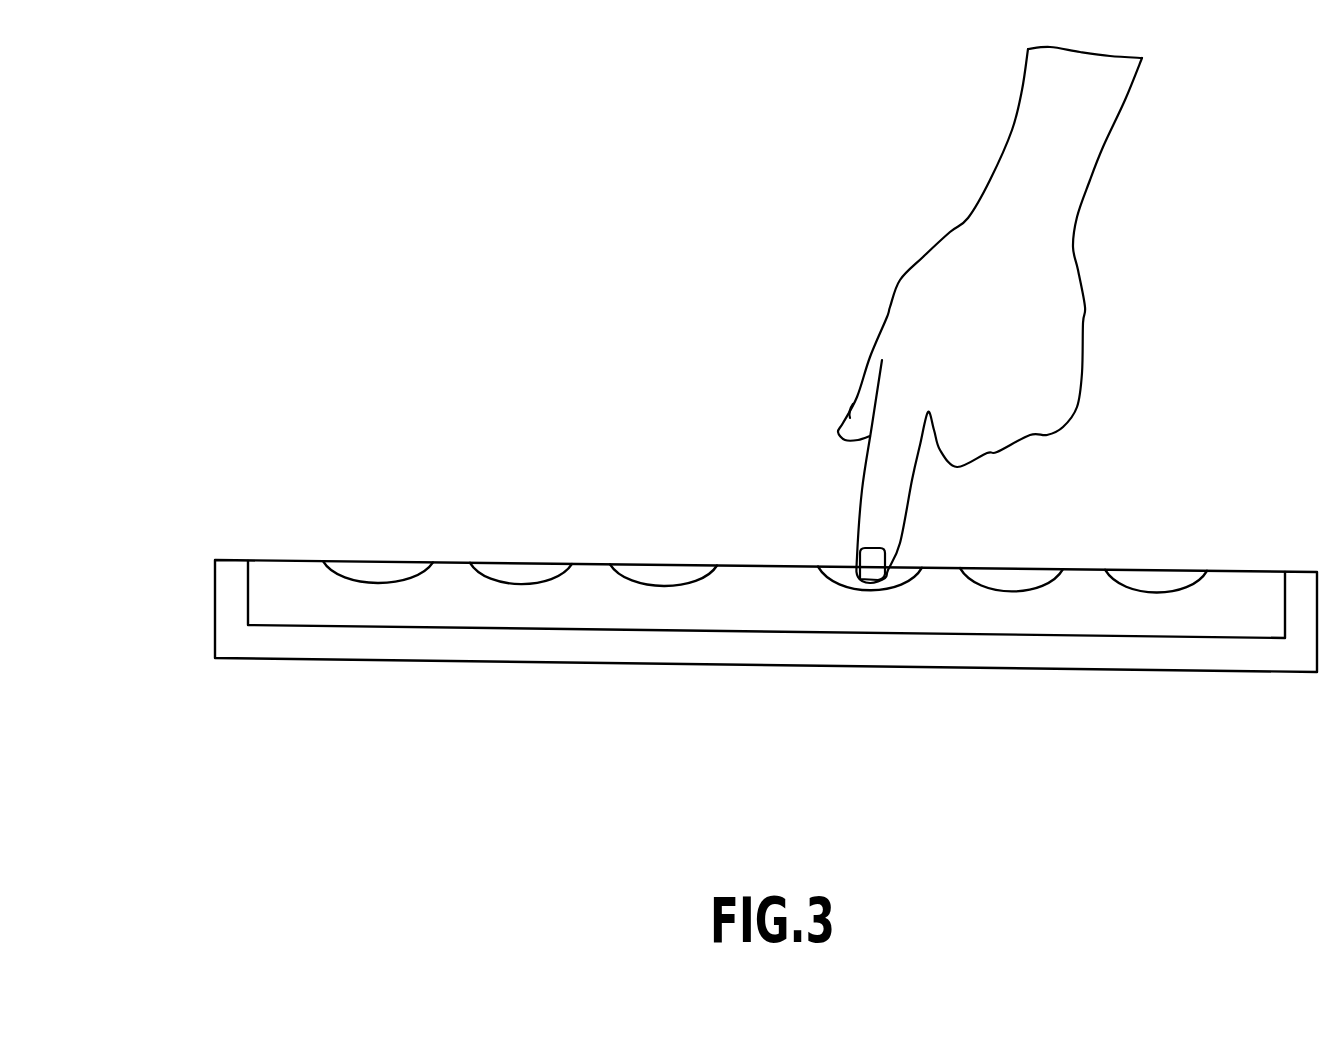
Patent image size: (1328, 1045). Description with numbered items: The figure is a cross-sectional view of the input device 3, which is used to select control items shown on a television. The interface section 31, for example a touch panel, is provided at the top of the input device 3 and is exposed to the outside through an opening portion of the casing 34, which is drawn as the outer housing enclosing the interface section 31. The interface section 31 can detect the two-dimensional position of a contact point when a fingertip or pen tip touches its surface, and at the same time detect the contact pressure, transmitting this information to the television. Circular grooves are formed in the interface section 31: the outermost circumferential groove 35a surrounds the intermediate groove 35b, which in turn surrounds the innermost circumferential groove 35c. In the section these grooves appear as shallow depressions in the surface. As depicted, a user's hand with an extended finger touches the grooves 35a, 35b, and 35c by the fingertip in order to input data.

The input device 3 is at (577, 210).
The interface section 31 is at (288, 580).
The casing 34 is at (948, 653).
The outermost circumferential groove 35a is at (1163, 583).
The intermediate groove 35b is at (1027, 582).
The innermost circumferential groove 35c is at (842, 578).